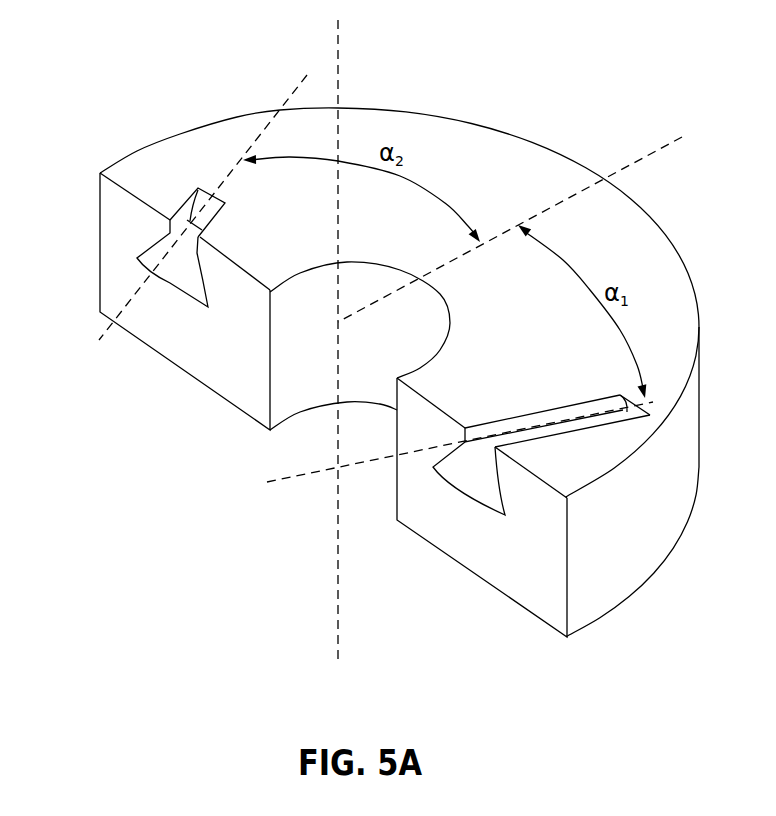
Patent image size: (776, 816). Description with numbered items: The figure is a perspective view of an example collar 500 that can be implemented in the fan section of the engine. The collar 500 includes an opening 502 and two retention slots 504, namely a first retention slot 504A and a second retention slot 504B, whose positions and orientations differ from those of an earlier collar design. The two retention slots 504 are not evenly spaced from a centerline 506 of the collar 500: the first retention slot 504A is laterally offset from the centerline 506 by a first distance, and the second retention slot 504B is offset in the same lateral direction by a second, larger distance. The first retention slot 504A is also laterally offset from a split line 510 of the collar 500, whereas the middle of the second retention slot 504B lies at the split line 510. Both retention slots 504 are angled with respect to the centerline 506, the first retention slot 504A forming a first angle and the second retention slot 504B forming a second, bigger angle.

The collar 500 is at (232, 50).
The opening 502 is at (319, 444).
The retention slots 504 is at (393, 351).
The first retention slot 504A is at (508, 412).
The second retention slot 504B is at (212, 225).
The centerline 506 is at (665, 148).
The split line 510 is at (548, 598).